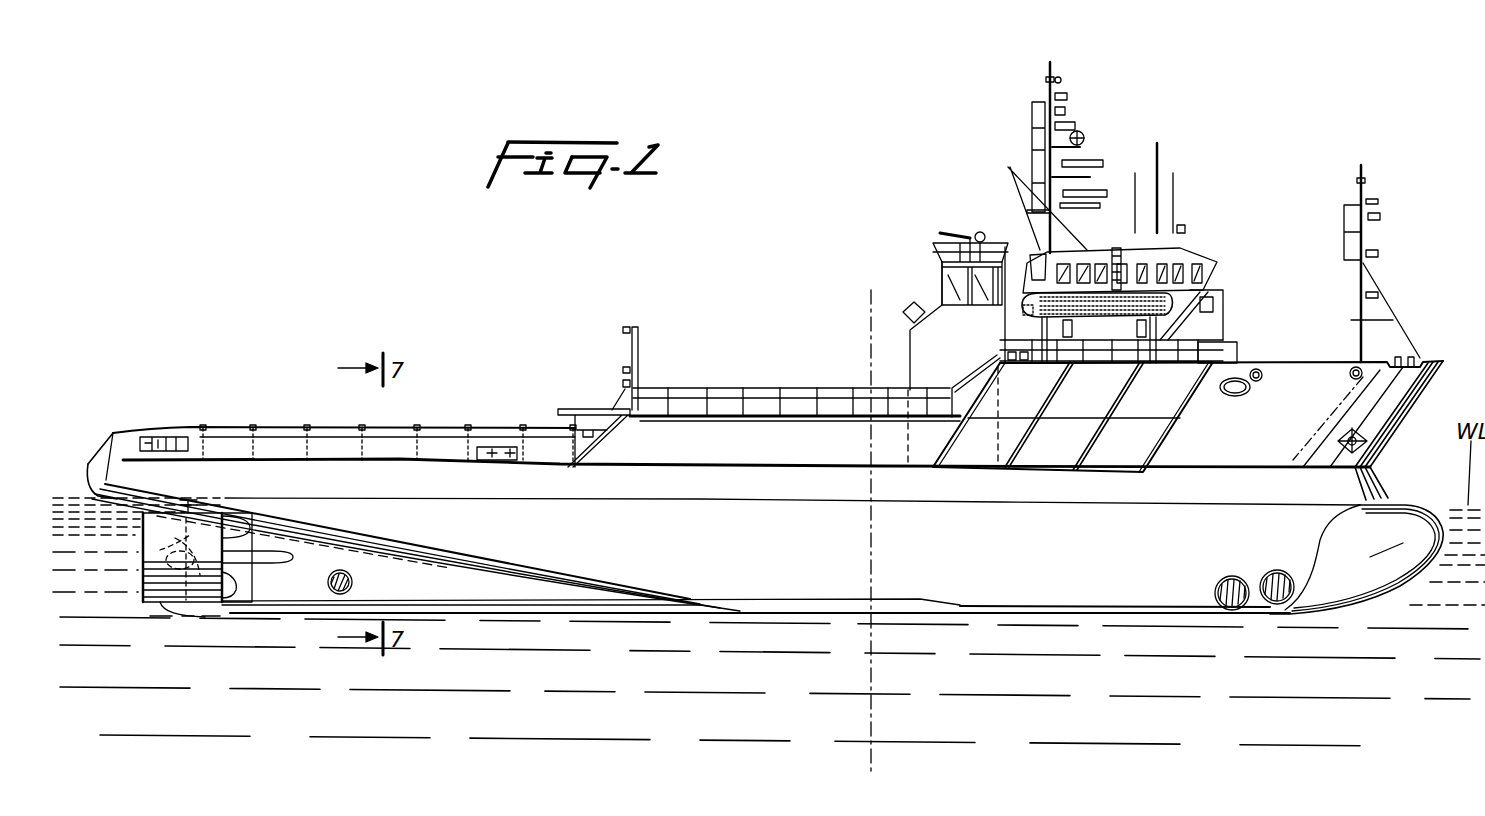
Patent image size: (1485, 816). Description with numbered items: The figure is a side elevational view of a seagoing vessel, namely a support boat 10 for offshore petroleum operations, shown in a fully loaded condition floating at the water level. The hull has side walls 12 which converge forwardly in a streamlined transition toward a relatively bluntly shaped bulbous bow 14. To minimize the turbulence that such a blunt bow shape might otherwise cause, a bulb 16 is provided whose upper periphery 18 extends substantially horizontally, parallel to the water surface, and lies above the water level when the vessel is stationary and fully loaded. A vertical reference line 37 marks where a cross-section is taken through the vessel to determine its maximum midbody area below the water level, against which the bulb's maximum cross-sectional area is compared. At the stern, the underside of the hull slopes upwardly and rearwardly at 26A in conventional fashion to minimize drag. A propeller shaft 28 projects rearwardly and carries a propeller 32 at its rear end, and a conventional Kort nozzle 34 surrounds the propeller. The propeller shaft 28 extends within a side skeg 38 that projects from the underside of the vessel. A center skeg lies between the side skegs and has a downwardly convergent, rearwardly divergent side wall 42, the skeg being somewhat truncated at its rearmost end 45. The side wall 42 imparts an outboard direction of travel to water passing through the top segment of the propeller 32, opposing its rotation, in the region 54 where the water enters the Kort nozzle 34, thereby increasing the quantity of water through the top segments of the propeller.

The support boat 10 is at (728, 330).
The side walls 12 is at (1025, 577).
The bulbous bow 14 is at (1411, 437).
The bulb 16 is at (1407, 557).
The upper periphery 18 is at (1378, 503).
The upwardly and rearwardly sloping portion of the underside 26A is at (315, 540).
The propeller shaft 28 is at (220, 603).
The propeller 32 is at (192, 610).
The Kort nozzle 34 is at (170, 588).
The reference line 37 is at (868, 318).
The side skeg 38 is at (462, 588).
The side wall of center skeg 42 is at (110, 487).
The rearmost end of center skeg 45 is at (123, 503).
The region 54 is at (238, 528).